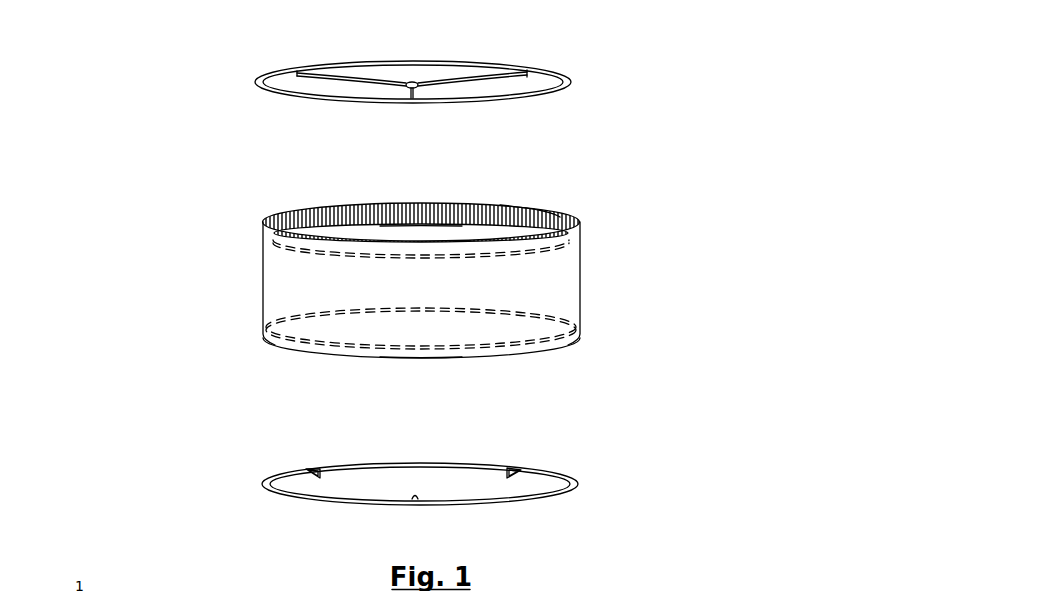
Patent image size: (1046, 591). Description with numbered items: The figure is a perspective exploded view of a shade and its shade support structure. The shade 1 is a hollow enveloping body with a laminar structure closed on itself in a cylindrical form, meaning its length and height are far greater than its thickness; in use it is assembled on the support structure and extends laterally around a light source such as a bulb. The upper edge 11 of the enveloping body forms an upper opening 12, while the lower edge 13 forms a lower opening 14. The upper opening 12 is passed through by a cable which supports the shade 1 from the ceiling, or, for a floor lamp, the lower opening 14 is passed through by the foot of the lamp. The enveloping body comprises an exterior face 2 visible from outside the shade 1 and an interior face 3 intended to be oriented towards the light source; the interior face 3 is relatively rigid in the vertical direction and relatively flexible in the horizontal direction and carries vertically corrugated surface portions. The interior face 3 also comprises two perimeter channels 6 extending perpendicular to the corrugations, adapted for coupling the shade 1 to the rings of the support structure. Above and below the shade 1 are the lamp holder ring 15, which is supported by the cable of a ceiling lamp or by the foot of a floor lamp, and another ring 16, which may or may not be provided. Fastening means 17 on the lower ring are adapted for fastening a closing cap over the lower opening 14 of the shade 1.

The shade 1 is at (143, 285).
The exterior face 2 is at (259, 260).
The interior face 3 is at (520, 208).
The perimeter channels 6 is at (467, 207).
The upper edge 11 is at (355, 203).
The upper opening 12 is at (432, 182).
The lower edge 13 is at (495, 356).
The lower opening 14 is at (423, 385).
The lamp holder ring 15 is at (626, 76).
The ring 16 is at (631, 482).
The fastening means 17 is at (507, 470).